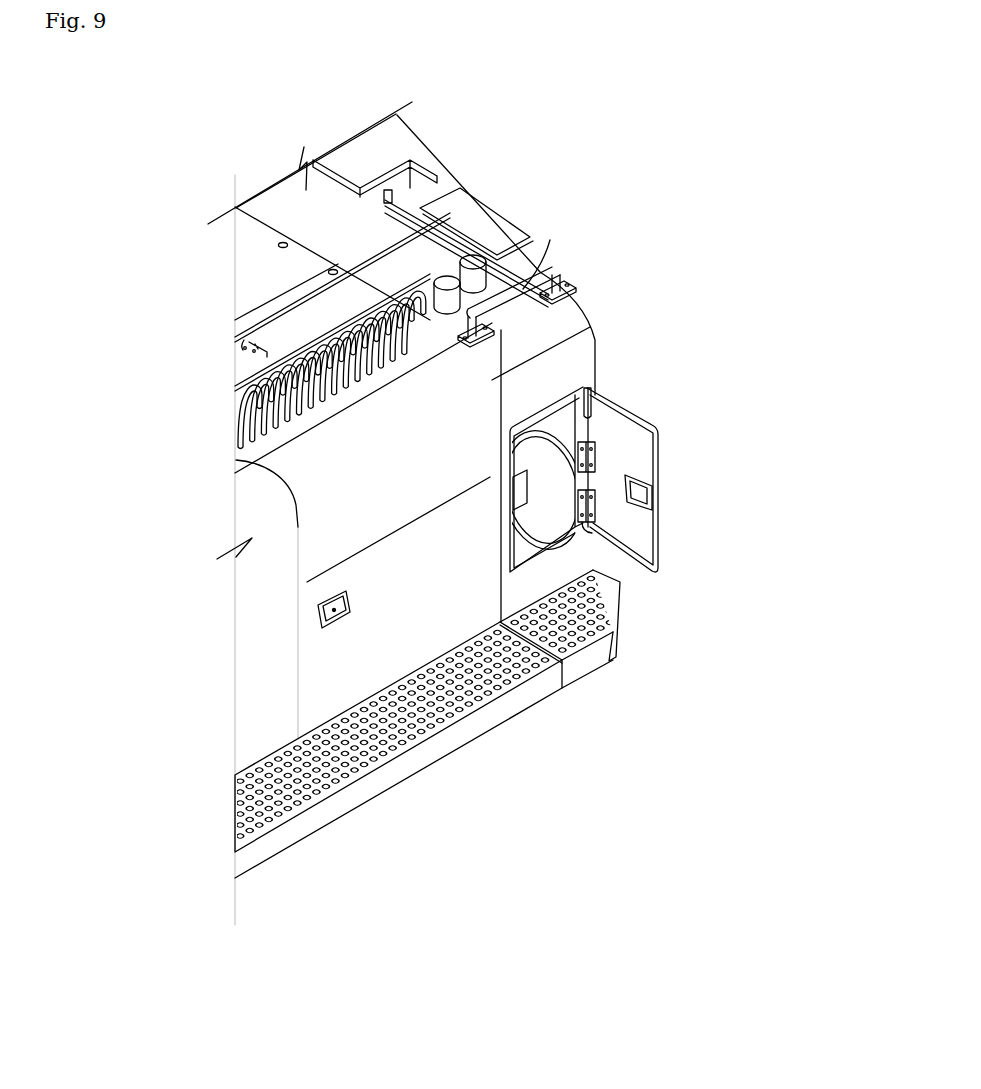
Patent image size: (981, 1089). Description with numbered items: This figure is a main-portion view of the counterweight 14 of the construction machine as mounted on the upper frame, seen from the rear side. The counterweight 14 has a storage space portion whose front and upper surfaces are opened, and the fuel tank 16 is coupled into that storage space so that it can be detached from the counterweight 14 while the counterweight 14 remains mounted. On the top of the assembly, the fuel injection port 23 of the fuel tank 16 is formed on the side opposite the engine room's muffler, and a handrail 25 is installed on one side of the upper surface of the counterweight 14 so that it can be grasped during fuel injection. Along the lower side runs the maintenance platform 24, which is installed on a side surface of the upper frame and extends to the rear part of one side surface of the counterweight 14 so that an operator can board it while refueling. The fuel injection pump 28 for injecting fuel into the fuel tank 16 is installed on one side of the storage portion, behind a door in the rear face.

The counterweight 14 is at (508, 197).
The fuel tank 16 is at (383, 237).
The fuel injection port 23 is at (520, 288).
The maintenance platform 24 is at (480, 698).
The handrail 25 is at (558, 250).
The fuel injection pump 28 is at (550, 468).